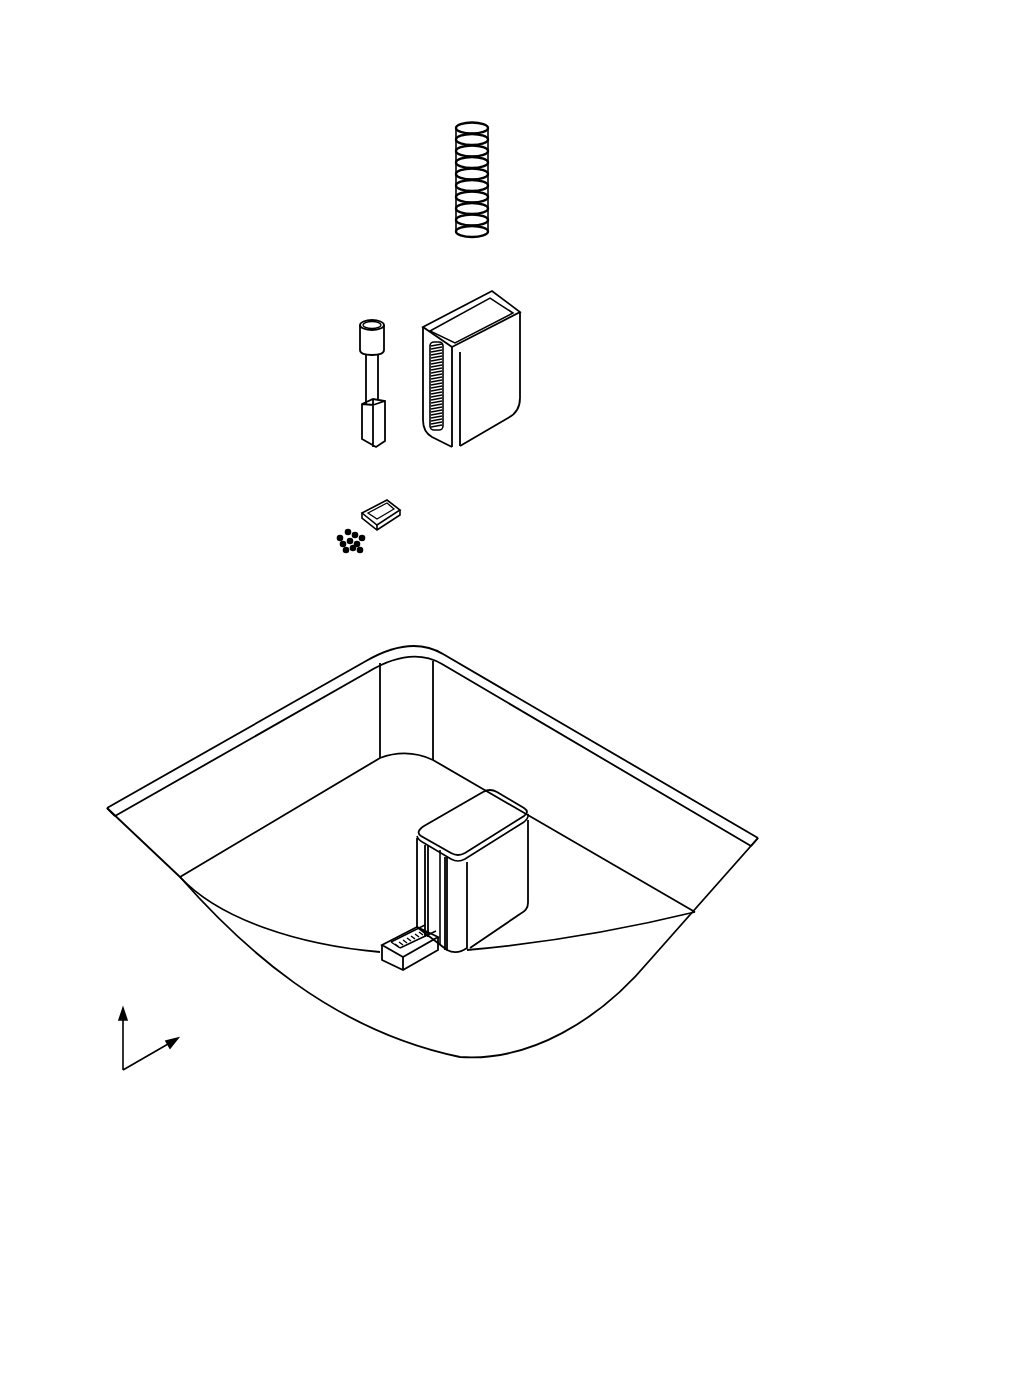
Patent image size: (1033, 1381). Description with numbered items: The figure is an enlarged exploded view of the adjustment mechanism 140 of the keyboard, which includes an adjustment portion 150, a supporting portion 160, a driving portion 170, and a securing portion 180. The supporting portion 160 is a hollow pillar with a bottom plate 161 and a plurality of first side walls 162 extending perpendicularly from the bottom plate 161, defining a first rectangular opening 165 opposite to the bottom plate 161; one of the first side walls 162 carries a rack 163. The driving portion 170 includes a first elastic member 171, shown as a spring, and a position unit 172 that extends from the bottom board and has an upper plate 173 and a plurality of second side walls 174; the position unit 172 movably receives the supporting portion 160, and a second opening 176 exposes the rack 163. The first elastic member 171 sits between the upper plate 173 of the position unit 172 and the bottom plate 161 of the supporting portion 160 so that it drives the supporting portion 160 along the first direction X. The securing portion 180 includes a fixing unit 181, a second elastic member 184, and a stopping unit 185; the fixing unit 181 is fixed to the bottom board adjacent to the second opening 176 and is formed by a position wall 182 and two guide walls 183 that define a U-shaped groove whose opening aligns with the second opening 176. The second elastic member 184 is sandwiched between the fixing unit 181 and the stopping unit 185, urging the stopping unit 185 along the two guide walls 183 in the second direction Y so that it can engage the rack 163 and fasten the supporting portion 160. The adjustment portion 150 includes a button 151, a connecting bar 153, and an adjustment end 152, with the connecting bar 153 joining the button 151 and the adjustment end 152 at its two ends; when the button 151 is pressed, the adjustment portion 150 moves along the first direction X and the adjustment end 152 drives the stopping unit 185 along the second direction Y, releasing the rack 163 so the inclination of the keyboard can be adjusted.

The adjustment mechanism 140 is at (459, 36).
The adjustment portion 150 is at (275, 295).
The button 151 is at (365, 319).
The adjustment end 152 is at (373, 430).
The connecting bar 153 is at (372, 380).
The supporting portion 160 is at (595, 341).
The bottom plate 161 is at (501, 426).
The first side walls 162 is at (507, 360).
The rack 163 is at (427, 348).
The first rectangular opening 165 is at (505, 302).
The driving portion 170 is at (655, 153).
The first elastic member 171 is at (492, 200).
The position unit 172 is at (638, 685).
The upper plate 173 is at (462, 820).
The second side walls 174 is at (512, 880).
The second opening 176 is at (438, 888).
The securing portion 180 is at (192, 482).
The fixing unit 181 is at (247, 655).
The position wall 182 is at (382, 945).
The guide walls 183 is at (400, 935).
The second elastic member 184 is at (334, 541).
The stopping unit 185 is at (365, 510).